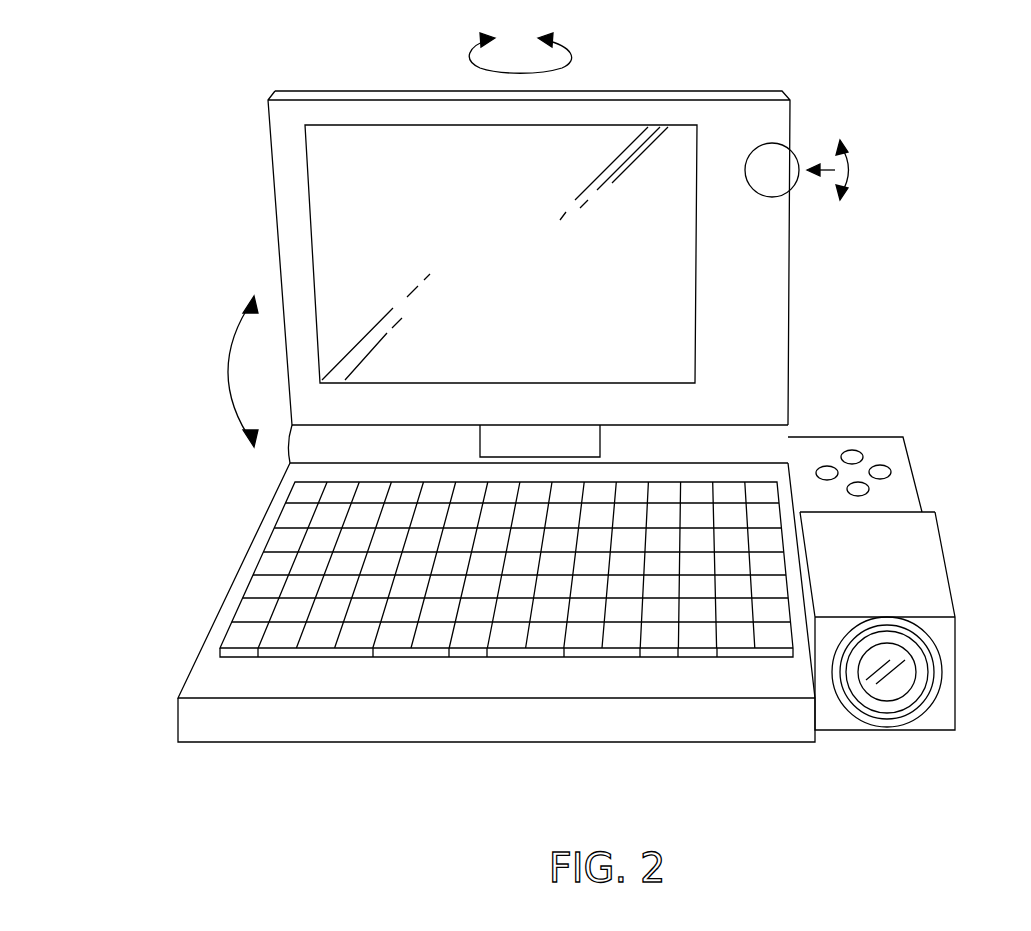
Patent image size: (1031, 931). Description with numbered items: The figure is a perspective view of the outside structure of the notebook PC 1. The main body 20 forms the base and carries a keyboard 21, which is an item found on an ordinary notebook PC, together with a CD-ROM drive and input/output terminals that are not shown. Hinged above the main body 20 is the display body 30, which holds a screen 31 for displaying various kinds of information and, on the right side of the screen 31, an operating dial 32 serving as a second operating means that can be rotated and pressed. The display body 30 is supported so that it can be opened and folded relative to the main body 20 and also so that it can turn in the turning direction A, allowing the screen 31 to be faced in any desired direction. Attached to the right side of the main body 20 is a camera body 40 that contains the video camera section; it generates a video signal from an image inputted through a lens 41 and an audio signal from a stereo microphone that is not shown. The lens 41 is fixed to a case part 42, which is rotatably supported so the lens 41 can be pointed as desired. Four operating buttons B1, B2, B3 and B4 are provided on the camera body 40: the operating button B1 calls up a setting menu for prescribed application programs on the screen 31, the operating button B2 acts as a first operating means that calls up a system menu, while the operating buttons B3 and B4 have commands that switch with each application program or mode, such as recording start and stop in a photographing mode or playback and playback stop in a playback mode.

The notebook PC 1 is at (916, 72).
The main body 20 is at (452, 682).
The keyboard 21 is at (283, 567).
The display body 30 is at (643, 91).
The screen 31 is at (680, 288).
The operating dial 32 is at (777, 157).
The camera body 40 is at (947, 557).
The lens 41 is at (887, 690).
The case part 42 is at (956, 592).
The operating button B1 is at (872, 487).
The operating button B2 is at (850, 452).
The operating button B3 is at (883, 470).
The operating button B4 is at (820, 467).
The turning direction A is at (462, 53).